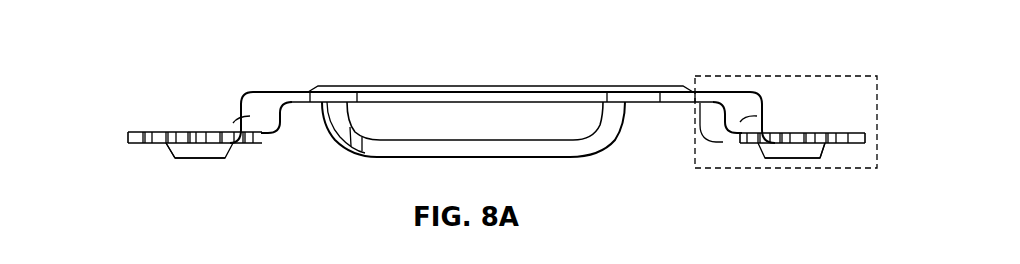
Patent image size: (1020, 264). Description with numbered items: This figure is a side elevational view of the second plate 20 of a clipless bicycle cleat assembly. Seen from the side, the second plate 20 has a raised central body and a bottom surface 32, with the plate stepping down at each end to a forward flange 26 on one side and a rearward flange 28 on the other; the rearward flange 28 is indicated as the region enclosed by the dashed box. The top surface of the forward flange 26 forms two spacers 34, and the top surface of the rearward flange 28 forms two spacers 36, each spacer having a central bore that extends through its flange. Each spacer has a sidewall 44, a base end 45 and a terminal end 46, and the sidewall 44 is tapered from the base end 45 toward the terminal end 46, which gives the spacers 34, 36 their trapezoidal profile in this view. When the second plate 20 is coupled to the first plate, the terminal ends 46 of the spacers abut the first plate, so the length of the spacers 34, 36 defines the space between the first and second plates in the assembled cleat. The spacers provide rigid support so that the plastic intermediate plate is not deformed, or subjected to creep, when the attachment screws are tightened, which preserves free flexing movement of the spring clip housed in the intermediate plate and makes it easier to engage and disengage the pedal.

The second plate 20 is at (120, 60).
The forward flange 26 is at (131, 146).
The rearward flange 28 is at (866, 137).
The bottom surface 32 is at (267, 90).
The spacers 34 is at (195, 176).
The spacers 36 is at (805, 173).
The sidewall 44 is at (167, 148).
The base end 45 is at (243, 146).
The terminal end 46 is at (223, 158).